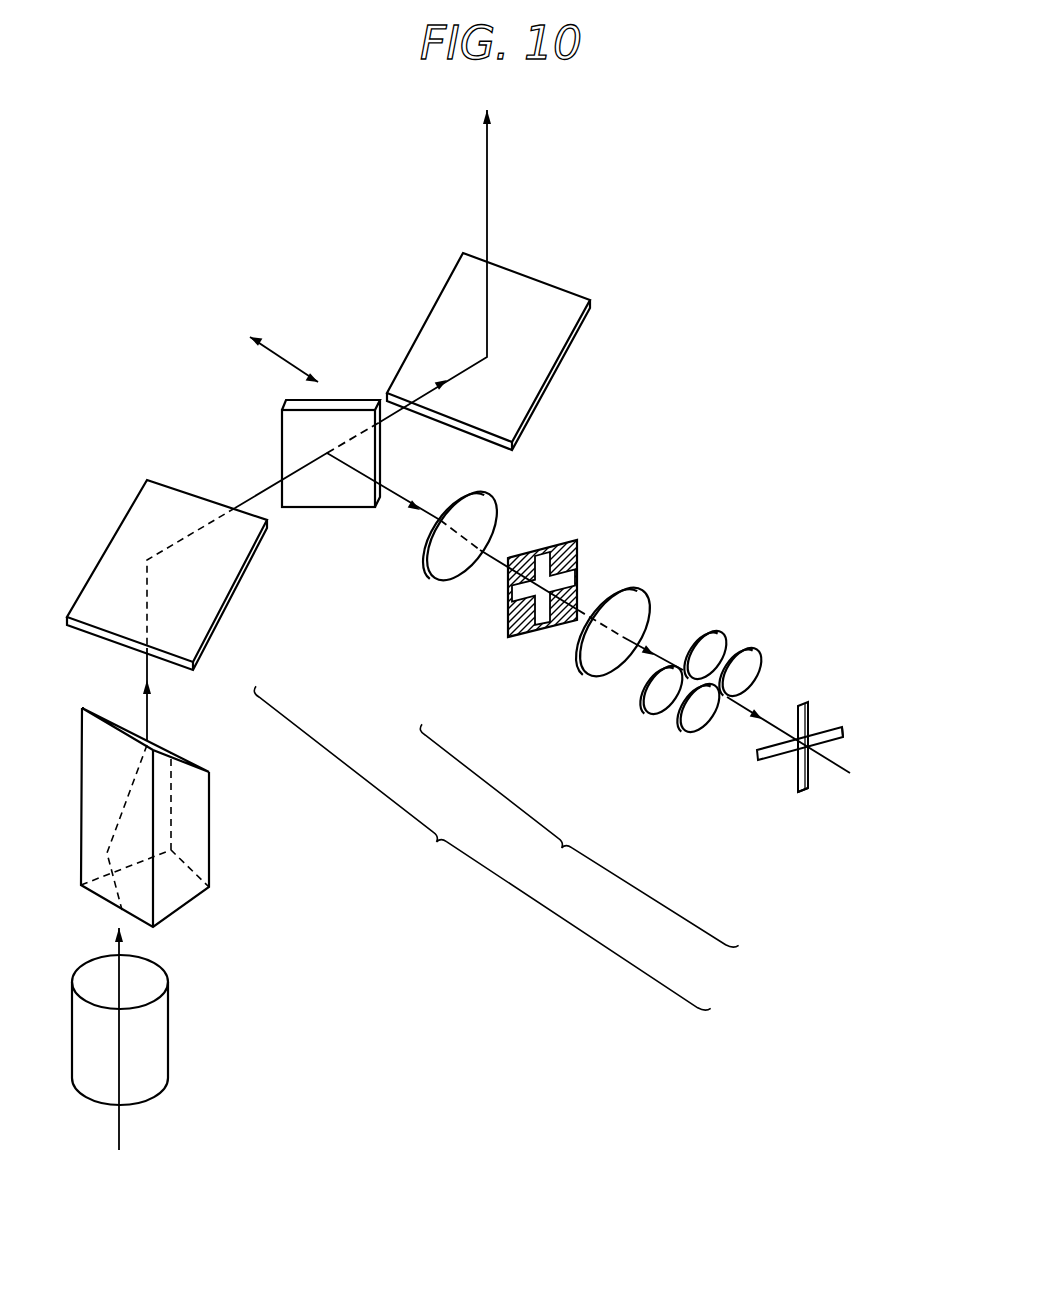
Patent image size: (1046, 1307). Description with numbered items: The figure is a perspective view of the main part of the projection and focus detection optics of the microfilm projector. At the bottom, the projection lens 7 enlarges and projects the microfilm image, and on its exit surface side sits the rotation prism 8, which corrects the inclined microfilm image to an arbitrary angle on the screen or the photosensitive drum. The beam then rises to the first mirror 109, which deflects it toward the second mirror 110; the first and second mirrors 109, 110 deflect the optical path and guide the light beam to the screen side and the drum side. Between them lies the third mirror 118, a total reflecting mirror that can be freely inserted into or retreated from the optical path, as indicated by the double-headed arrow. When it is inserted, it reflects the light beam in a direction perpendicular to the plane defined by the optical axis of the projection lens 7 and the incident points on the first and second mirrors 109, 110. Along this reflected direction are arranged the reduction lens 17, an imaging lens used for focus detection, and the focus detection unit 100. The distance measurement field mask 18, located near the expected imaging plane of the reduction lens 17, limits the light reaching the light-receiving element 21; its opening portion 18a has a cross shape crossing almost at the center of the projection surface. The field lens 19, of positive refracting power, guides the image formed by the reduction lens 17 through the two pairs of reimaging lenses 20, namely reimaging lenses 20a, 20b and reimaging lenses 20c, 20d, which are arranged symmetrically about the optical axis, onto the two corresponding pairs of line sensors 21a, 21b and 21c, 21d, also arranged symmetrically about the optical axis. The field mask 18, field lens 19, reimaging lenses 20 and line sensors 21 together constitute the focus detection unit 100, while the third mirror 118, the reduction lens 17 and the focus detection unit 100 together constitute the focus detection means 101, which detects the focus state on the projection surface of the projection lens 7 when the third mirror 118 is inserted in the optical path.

The projection lens 7 is at (158, 1033).
The rotation prism 8 is at (203, 807).
The reduction lens 17 is at (438, 555).
The distance measurement field mask 18 is at (545, 586).
The opening portion 18a is at (543, 550).
The field lens 19 is at (633, 605).
The reimaging lenses 20 is at (687, 696).
The reimaging lens 20a is at (710, 640).
The reimaging lens 20b is at (686, 731).
The reimaging lens 20c is at (645, 708).
The reimaging lens 20d is at (758, 657).
The light-receiving element 21 is at (795, 785).
The line sensor 21a is at (808, 707).
The line sensor 21b is at (803, 792).
The line sensor 21c is at (757, 757).
The line sensor 21d is at (843, 732).
The focus detection unit 100 is at (579, 835).
The focus detection means 101 is at (482, 848).
The first mirror 109 is at (105, 560).
The second mirror 110 is at (547, 285).
The third mirror 118 is at (318, 490).